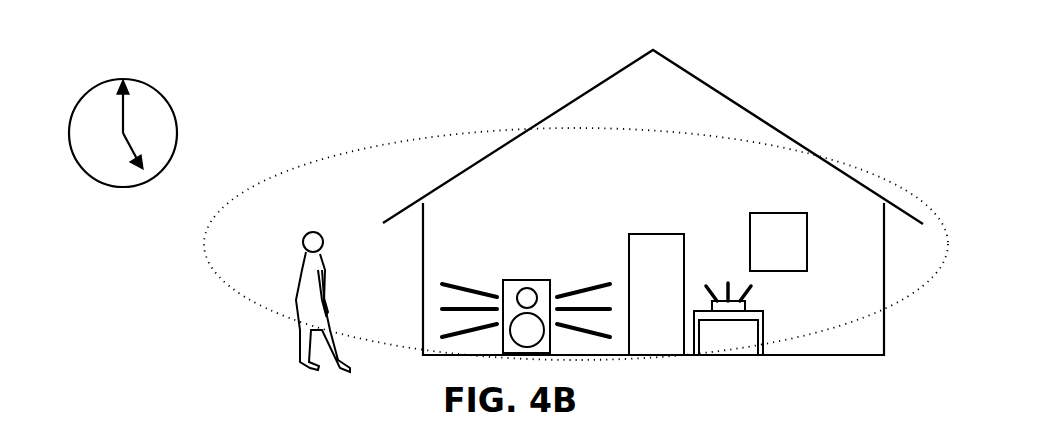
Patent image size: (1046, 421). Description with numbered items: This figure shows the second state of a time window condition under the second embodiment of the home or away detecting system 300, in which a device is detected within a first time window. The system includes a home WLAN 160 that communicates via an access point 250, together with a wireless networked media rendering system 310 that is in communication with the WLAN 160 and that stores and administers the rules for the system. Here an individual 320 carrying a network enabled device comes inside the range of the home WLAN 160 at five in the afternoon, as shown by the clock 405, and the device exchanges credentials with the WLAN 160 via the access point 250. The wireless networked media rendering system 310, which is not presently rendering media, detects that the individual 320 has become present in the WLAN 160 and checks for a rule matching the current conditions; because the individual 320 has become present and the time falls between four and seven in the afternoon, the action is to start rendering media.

The clock 405 is at (158, 92).
The home or away detecting system 300 is at (398, 110).
The home WLAN 160 is at (887, 182).
The individual 320 is at (323, 292).
The wireless networked media rendering system 310 is at (530, 278).
The access point 250 is at (721, 300).